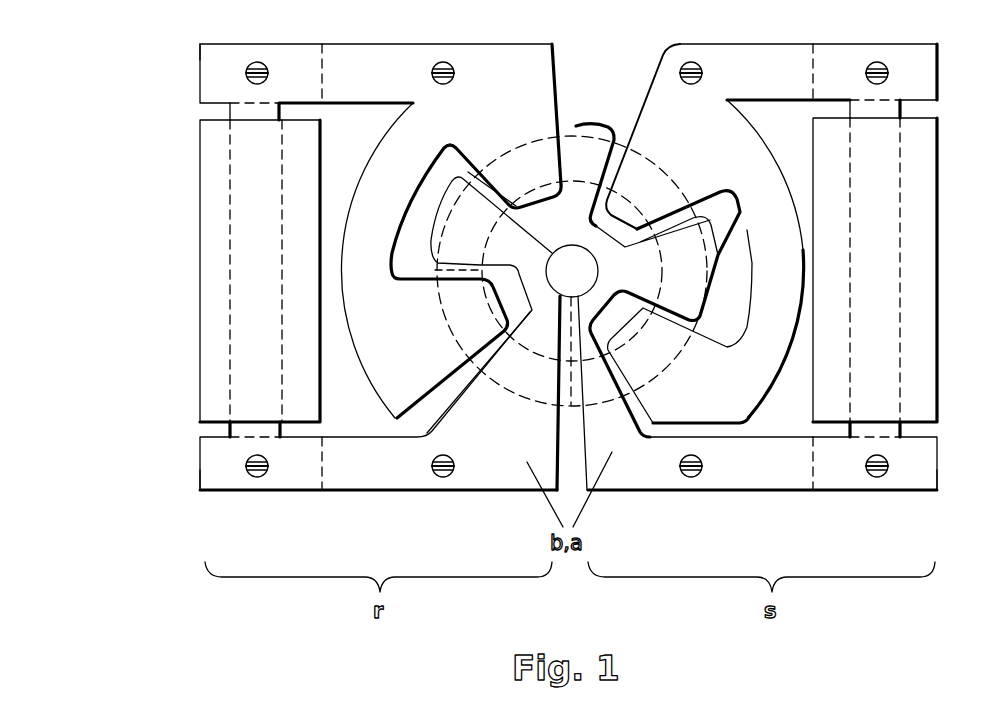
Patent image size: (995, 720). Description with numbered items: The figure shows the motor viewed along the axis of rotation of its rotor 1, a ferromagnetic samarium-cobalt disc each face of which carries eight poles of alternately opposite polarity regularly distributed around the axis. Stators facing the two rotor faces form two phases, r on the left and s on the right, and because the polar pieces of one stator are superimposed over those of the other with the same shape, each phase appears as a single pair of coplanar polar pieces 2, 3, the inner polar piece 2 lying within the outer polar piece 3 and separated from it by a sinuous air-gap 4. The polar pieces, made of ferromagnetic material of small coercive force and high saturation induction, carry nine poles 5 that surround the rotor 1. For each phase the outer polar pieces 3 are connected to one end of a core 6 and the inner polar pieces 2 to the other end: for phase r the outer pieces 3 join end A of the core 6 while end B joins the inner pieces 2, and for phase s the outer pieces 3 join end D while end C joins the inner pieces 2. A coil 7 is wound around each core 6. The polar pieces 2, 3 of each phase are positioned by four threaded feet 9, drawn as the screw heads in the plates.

The rotor 1 is at (572, 245).
The inner polar piece 2 is at (382, 472).
The outer polar piece 3 is at (376, 58).
The sinuous air-gap 4 is at (402, 335).
The poles 5 is at (530, 153).
The core 6 is at (262, 431).
The coil 7 is at (212, 268).
The threaded feet 9 is at (257, 62).
The end of core of phase r A is at (213, 74).
The end of core of phase r B is at (212, 467).
The end of core of phase s C is at (925, 467).
The end of core of phase s D is at (923, 75).